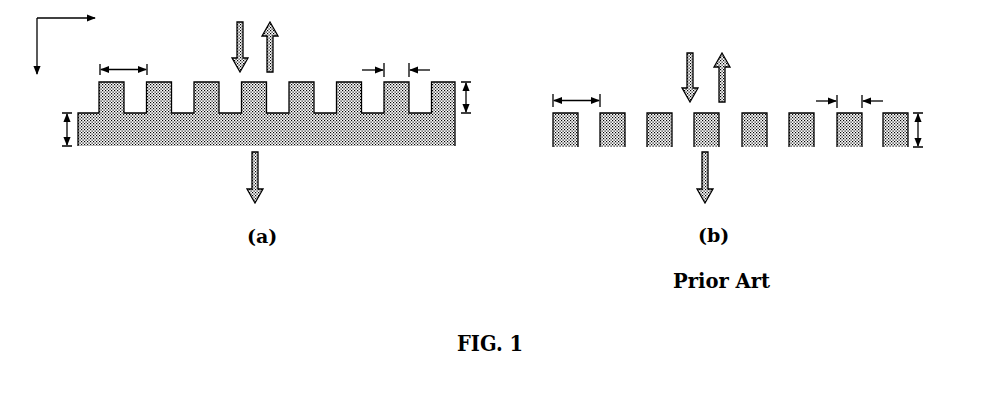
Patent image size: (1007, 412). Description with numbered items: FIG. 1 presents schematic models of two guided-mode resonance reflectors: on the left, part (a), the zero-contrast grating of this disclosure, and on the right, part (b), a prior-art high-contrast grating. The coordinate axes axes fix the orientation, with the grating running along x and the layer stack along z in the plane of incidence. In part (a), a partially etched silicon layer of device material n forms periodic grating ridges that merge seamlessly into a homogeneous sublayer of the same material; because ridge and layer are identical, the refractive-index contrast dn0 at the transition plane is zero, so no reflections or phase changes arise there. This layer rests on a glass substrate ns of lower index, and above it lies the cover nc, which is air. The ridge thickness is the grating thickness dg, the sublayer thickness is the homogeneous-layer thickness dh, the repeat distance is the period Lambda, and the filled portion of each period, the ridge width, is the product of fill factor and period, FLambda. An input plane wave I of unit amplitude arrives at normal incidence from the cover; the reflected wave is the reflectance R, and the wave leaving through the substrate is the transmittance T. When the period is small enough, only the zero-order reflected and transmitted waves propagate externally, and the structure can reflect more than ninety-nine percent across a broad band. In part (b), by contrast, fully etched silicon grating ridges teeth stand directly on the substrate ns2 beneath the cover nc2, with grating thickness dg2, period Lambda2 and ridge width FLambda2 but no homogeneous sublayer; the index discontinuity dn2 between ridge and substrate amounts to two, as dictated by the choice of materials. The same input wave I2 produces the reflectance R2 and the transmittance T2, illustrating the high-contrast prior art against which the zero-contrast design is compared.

The coordinate axes is at (70, 54).
The device material with refractive index n is at (266, 114).
The substrate with refractive index n_s ns is at (267, 179).
The cover material with refractive index n_c nc is at (267, 46).
The period Λ Lambda is at (123, 57).
The filled space FΛ FLambda is at (396, 58).
The grating thickness d_g dg is at (478, 97).
The homogeneous-layer thickness d_h dh is at (53, 129).
The input plane wave I is at (235, 47).
The reflectance R is at (278, 47).
The transmittance T is at (262, 177).
The refractive-index contrast Δn=0 dn0 is at (394, 118).
The grating ridges of refractive index n teeth is at (730, 130).
The substrate with refractive index n_s ns2 is at (719, 180).
The cover material with refractive index n_c nc2 is at (719, 78).
The period Λ Lambda2 is at (576, 90).
The filled space FΛ FLambda2 is at (849, 90).
The grating thickness d_g dg2 is at (930, 130).
The input plane wave I I2 is at (685, 77).
The reflectance R R2 is at (730, 77).
The transmittance T T2 is at (712, 177).
The refractive-index discontinuity Δn=2 dn2 is at (848, 150).